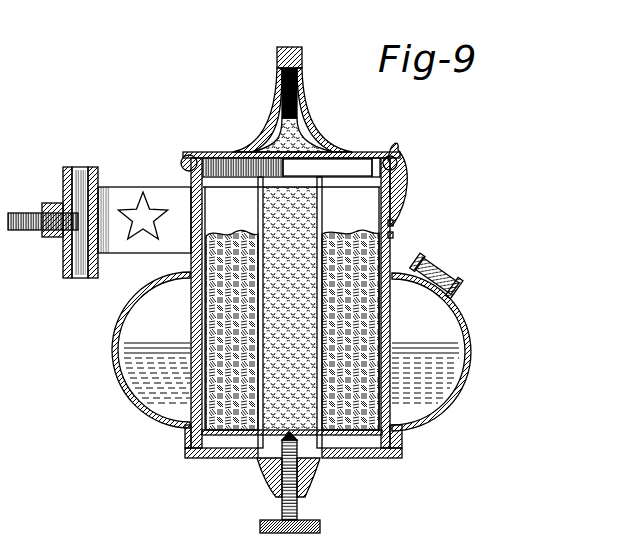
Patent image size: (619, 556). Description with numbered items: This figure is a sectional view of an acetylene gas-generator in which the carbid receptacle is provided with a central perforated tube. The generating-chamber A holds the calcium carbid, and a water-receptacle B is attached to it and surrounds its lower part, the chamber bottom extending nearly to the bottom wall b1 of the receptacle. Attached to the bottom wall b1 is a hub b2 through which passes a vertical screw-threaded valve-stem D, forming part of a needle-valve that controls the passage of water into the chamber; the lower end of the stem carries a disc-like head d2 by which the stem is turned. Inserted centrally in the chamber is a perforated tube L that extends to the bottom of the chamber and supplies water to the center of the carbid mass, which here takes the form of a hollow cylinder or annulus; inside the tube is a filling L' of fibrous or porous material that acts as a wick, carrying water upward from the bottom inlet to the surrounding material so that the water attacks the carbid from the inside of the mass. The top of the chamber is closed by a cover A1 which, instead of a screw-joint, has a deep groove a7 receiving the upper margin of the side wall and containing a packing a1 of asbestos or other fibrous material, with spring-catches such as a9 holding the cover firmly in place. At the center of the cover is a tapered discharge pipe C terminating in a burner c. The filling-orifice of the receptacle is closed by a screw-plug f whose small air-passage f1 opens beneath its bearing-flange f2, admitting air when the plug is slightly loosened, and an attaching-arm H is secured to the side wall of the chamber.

The attaching-arm H is at (146, 187).
The discharge pipe C is at (303, 97).
The burner c is at (290, 43).
The cover A1 is at (347, 153).
The deep groove a7 is at (452, 118).
The packing a1 is at (195, 160).
The generating-chamber A is at (392, 230).
The spring-catch a9 is at (317, 200).
The porous filling L' is at (420, 180).
The perforated tube L is at (357, 191).
The water-receptacle B is at (463, 325).
The screw-plug f is at (447, 277).
The air-passage f1 is at (427, 270).
The bearing-flange f2 is at (457, 290).
The bottom wall b1 is at (375, 455).
The hub b2 is at (272, 472).
The valve-stem D is at (298, 507).
The foot disc d2 is at (322, 527).